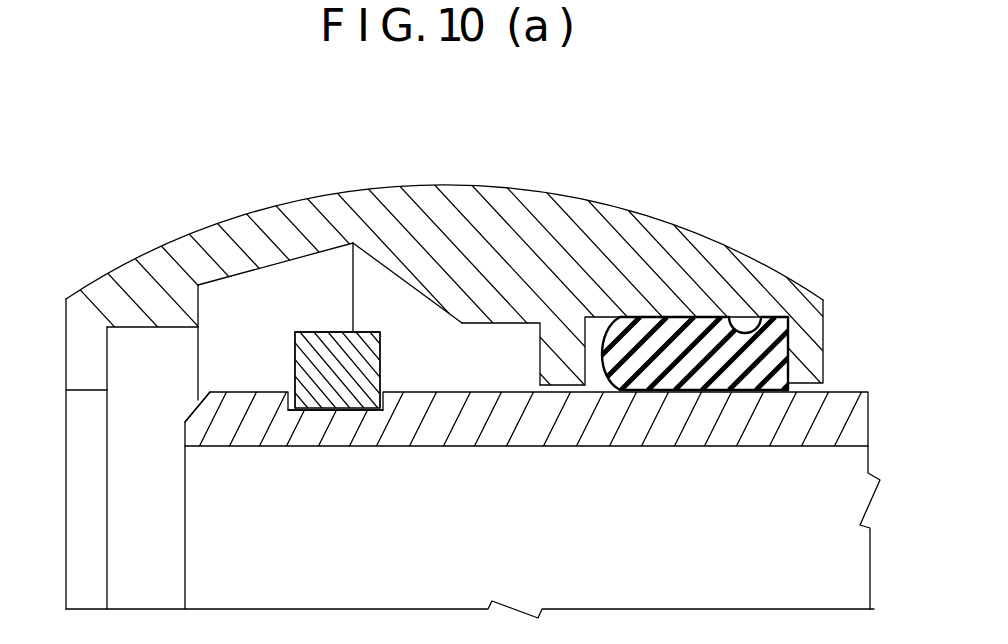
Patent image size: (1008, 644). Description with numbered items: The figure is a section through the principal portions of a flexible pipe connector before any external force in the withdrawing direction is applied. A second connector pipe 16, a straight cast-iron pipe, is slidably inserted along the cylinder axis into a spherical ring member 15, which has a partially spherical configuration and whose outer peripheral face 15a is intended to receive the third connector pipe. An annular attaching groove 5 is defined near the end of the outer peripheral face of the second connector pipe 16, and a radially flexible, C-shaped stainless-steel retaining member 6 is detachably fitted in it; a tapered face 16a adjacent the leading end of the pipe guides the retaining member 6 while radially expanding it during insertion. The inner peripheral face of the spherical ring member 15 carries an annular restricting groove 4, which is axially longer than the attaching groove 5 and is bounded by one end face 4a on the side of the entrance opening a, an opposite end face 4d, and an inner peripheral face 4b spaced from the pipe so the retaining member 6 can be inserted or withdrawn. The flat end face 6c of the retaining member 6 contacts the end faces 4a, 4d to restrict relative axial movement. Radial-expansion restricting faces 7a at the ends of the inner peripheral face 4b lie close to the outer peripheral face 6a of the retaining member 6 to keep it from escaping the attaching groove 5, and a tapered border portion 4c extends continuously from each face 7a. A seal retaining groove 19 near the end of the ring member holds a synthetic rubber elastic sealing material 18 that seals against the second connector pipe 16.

The spherical ring member 15 is at (542, 212).
The outer peripheral face 15a is at (632, 213).
The entrance opening a is at (834, 378).
The seal retaining groove 19 is at (590, 317).
The third elastic sealing material 18 is at (697, 373).
The end face of the restricting groove 4a is at (540, 372).
The inner peripheral face of the restricting groove 4b is at (212, 278).
The border portion 4c is at (403, 285).
The restricting groove 4 is at (247, 277).
The radial-expansion restricting face 7a is at (141, 326).
The other end face of the restricting groove 4d is at (108, 372).
The second connector pipe 16 is at (668, 446).
The tapered face 16a is at (205, 398).
The retaining member 6 is at (360, 363).
The outer peripheral face of the retaining member 6a is at (320, 332).
The end face of the retaining member 6c is at (297, 361).
The attaching groove 5 is at (316, 408).